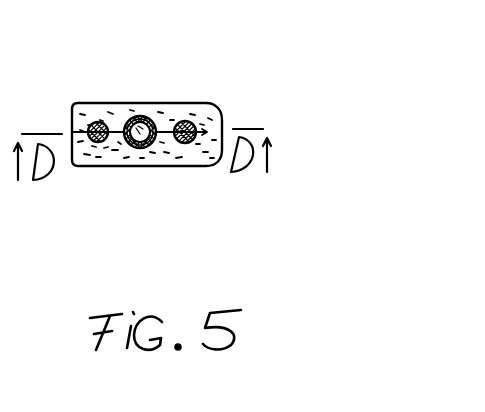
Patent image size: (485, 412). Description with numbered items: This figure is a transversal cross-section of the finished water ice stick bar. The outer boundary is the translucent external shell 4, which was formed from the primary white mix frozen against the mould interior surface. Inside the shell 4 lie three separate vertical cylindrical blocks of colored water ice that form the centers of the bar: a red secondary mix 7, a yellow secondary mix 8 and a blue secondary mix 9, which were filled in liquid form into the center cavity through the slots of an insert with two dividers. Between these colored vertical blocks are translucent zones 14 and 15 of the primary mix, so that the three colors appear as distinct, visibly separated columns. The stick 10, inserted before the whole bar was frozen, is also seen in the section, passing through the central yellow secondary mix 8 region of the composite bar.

The shell 4 is at (222, 108).
The secondary mix 7 is at (93, 126).
The secondary mix 8 is at (141, 118).
The secondary mix 9 is at (193, 121).
The stick 10 is at (132, 124).
The translucent zone 14 is at (117, 131).
The translucent zone 15 is at (162, 126).